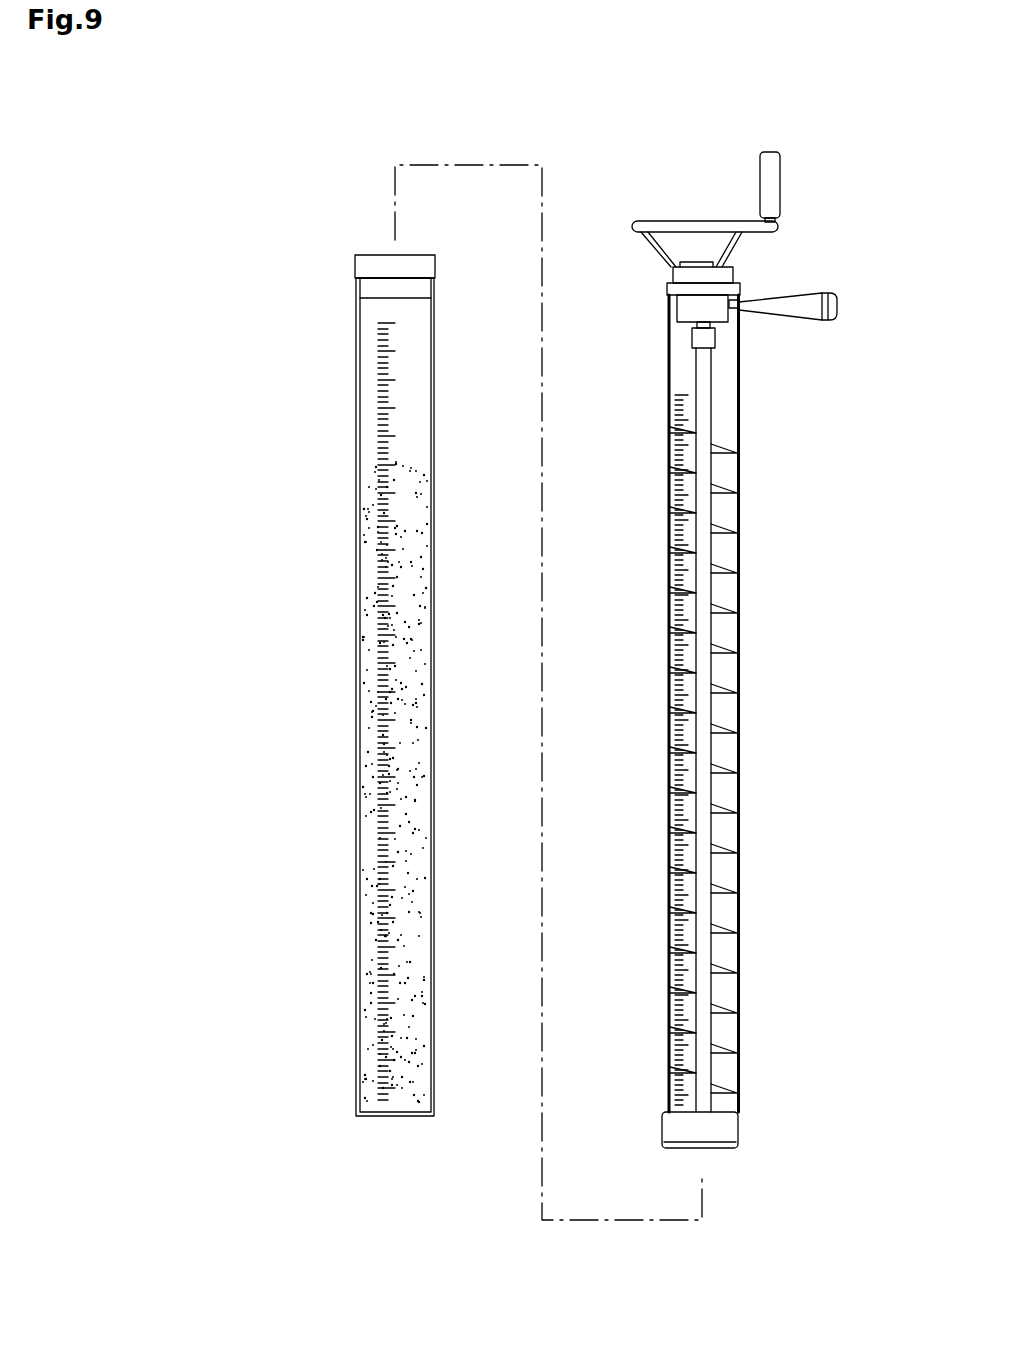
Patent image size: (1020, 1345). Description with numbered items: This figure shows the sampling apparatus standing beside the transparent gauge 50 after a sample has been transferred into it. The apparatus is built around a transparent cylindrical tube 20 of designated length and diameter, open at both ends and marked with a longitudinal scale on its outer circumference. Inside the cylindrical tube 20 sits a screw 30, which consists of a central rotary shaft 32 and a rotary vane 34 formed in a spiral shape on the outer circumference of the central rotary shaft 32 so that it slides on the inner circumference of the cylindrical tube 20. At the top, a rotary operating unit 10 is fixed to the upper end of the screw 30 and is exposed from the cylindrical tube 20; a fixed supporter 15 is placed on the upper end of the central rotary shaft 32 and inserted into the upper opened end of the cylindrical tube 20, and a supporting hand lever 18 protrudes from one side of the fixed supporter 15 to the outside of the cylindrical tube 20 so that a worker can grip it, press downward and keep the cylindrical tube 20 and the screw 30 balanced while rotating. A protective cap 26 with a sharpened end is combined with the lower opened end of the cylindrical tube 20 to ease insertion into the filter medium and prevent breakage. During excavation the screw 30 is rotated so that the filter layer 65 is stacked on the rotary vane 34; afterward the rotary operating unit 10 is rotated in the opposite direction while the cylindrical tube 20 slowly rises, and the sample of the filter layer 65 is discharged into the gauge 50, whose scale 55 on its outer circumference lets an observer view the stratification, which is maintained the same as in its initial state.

The rotary operating unit 10 is at (641, 216).
The fixed supporter 15 is at (678, 277).
The supporting hand lever 18 is at (822, 294).
The cylindrical tube 20 is at (667, 357).
The protective cap 26 is at (735, 1125).
The screw 30 is at (791, 720).
The central rotary shaft 32 is at (703, 417).
The rotary vane 34 is at (716, 485).
The gauge 50 is at (432, 335).
The scale 55 is at (382, 395).
The filter layer 65 is at (408, 488).